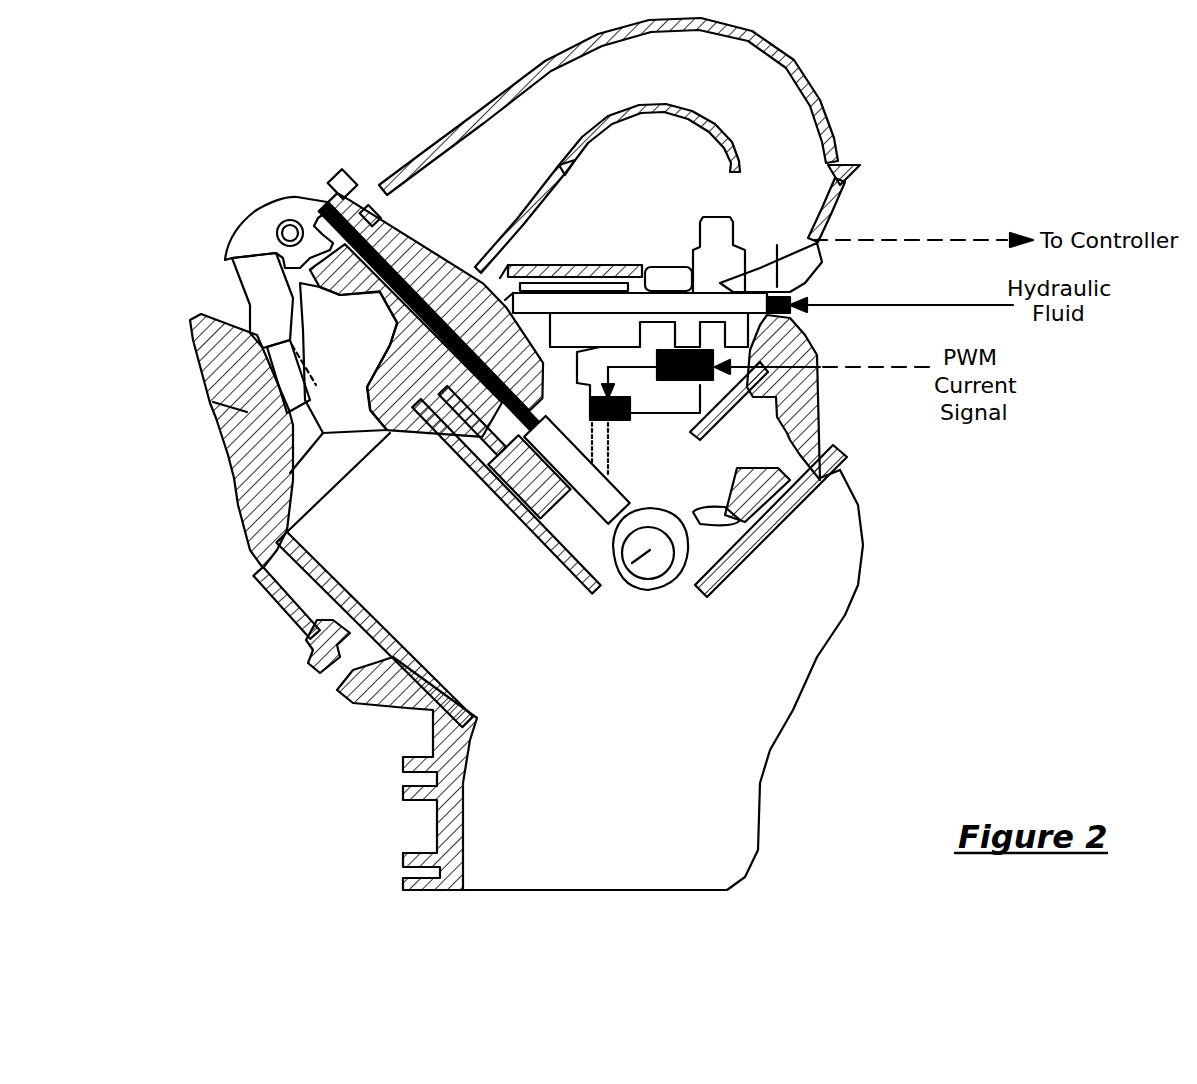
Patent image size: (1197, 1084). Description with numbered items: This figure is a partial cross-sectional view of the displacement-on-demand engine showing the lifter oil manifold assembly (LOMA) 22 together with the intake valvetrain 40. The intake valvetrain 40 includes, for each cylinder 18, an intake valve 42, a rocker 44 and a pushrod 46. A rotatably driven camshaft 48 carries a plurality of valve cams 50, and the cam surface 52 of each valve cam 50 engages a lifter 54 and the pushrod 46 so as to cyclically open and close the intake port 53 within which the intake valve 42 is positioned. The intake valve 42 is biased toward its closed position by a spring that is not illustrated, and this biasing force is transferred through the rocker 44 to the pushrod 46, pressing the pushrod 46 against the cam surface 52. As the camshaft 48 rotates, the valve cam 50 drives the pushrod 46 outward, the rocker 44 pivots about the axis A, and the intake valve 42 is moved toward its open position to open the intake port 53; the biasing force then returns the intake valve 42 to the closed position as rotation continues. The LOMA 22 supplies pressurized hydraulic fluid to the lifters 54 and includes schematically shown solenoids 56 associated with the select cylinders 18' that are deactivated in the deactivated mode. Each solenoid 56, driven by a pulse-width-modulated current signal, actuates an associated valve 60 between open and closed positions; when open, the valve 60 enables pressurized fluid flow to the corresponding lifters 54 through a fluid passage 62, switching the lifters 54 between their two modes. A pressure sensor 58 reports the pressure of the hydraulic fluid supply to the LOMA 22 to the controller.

The cylinder 18 is at (662, 602).
The select cylinder 18' is at (350, 580).
The lifter oil manifold assembly (LOMA) 22 is at (681, 255).
The intake valvetrain 40 is at (298, 148).
The intake valve 42 is at (243, 293).
The rocker 44 is at (233, 240).
The axis A is at (290, 227).
The pushrod 46 is at (503, 427).
The camshaft 48 is at (622, 580).
The valve cam 50 is at (676, 567).
The cam surface 52 is at (693, 533).
The intake port 53 is at (240, 473).
The lifter 54 is at (575, 490).
The solenoid 56 is at (687, 383).
The pressure sensor 58 is at (750, 287).
The valve 60 is at (590, 405).
The fluid passage 62 is at (613, 438).